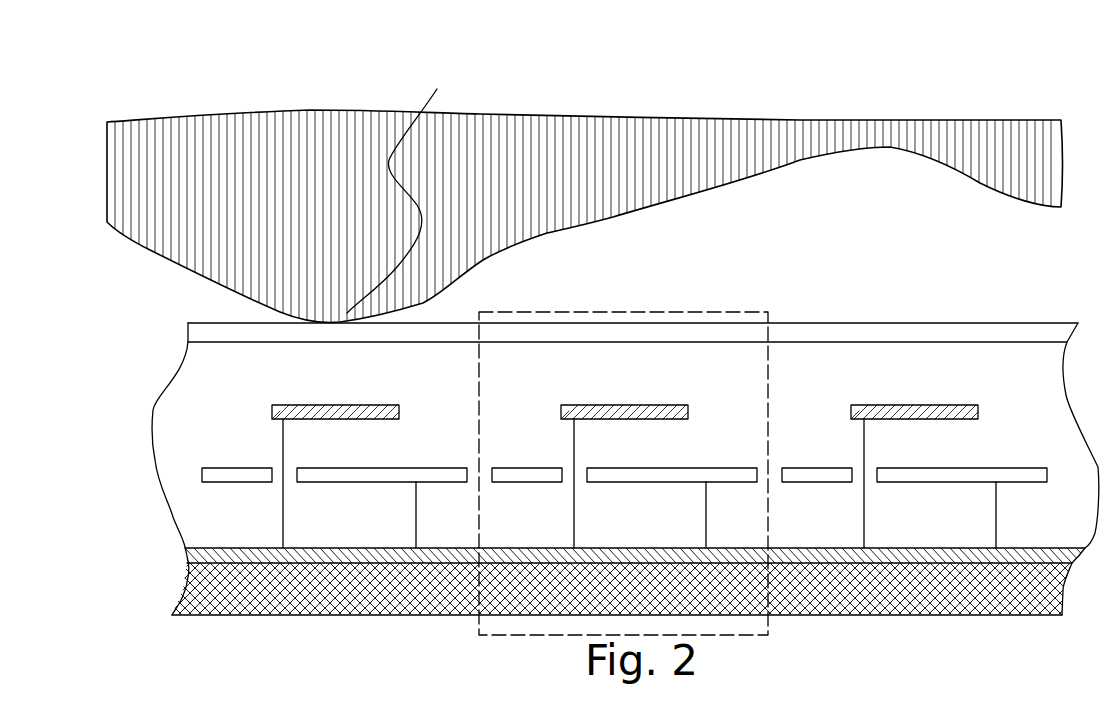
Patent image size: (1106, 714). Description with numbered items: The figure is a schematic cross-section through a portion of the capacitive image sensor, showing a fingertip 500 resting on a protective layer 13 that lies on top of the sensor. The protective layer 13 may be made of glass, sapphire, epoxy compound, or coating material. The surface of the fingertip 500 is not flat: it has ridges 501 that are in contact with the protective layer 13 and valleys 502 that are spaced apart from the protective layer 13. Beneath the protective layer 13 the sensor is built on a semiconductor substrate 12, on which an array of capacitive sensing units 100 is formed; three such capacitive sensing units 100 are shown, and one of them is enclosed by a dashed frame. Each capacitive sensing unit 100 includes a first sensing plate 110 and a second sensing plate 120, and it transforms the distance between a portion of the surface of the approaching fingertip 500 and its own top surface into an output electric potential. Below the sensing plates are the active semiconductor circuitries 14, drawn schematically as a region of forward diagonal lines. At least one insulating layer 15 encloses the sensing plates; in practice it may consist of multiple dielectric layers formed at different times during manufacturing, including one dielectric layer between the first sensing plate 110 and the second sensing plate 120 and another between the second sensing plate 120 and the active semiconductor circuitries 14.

The fingertip 500 is at (312, 128).
The ridges 501 is at (402, 182).
The valleys 502 is at (875, 137).
The capacitive sensing unit 100 is at (716, 311).
The protective layer 13 is at (196, 332).
The first sensing plate 110 is at (272, 418).
The second sensing plate 120 is at (217, 477).
The insulating layer 15 is at (197, 510).
The active semiconductor circuitries 14 is at (193, 555).
The semiconductor substrate 12 is at (193, 587).